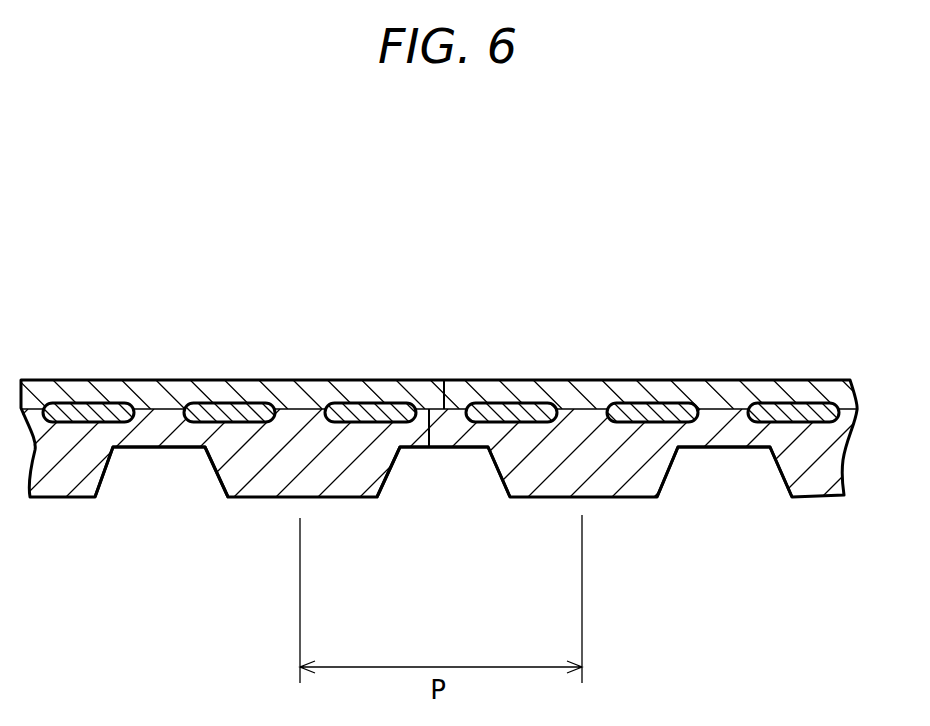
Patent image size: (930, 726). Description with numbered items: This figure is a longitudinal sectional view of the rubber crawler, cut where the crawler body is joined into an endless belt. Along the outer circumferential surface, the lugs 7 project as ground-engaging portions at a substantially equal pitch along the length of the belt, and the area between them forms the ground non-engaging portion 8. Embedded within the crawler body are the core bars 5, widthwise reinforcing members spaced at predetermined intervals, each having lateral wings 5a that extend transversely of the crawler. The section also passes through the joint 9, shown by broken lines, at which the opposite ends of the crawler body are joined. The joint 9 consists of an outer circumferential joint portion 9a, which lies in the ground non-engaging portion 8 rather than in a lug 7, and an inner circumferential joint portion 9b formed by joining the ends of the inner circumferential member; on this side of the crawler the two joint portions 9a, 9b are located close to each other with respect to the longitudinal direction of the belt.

The core bar 5 is at (435, 368).
The lateral wing 5a is at (74, 410).
The lug 7 is at (62, 483).
The ground non-engaging portion 8 is at (140, 448).
The joint 9 is at (444, 429).
The outer circumferential joint portion 9a is at (437, 447).
The inner circumferential joint portion 9b is at (447, 382).